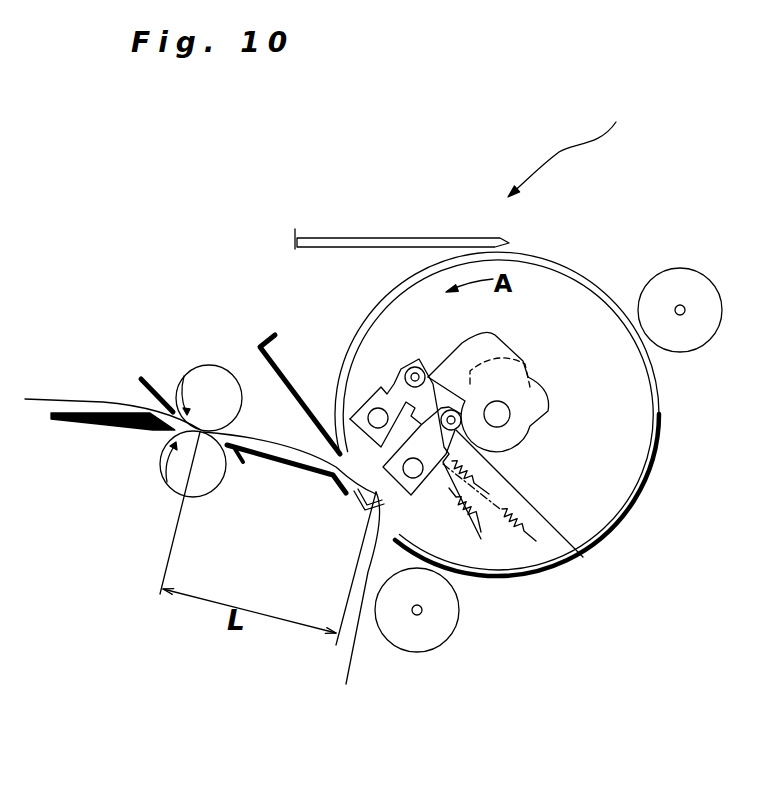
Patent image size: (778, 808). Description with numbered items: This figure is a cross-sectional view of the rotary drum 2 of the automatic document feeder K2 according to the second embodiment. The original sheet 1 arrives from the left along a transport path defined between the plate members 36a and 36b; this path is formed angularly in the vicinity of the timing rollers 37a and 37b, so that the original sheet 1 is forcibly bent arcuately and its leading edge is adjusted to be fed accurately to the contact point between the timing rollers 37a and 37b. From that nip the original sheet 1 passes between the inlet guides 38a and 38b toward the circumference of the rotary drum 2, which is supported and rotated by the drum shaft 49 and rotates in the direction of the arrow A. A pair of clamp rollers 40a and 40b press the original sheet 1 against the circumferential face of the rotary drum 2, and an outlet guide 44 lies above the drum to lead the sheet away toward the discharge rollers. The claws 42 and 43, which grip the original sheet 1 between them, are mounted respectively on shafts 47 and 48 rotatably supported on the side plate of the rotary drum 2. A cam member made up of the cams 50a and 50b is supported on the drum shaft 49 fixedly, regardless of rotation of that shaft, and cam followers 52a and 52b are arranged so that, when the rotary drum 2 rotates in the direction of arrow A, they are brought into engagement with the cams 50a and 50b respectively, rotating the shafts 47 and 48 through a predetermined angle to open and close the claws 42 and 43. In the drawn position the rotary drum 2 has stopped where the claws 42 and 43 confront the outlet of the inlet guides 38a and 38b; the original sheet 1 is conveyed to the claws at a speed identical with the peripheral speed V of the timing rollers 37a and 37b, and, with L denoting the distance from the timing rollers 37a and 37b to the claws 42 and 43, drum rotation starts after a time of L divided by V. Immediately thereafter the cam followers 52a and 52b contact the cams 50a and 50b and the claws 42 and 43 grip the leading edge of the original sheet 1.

The original sheet 1 is at (35, 402).
The rotary drum 2 is at (562, 262).
The plate member 36a is at (148, 378).
The plate member 36b is at (123, 432).
The timing roller 37a is at (203, 363).
The timing roller 37b is at (166, 483).
The inlet guide 38a is at (287, 380).
The inlet guide 38b is at (267, 463).
The clamp roller 40a is at (420, 650).
The clamp roller 40b is at (697, 268).
The claw 42 is at (352, 500).
The claw 43 is at (352, 602).
The outlet guide 44 is at (408, 236).
The shaft 47 is at (417, 472).
The shaft 48 is at (372, 408).
The drum shaft 49 is at (500, 417).
The cam 50a is at (548, 398).
The cam 50b is at (505, 338).
The cam follower 52a is at (580, 555).
The cam follower 52b is at (405, 368).
The automatic document feeder K2 is at (586, 141).